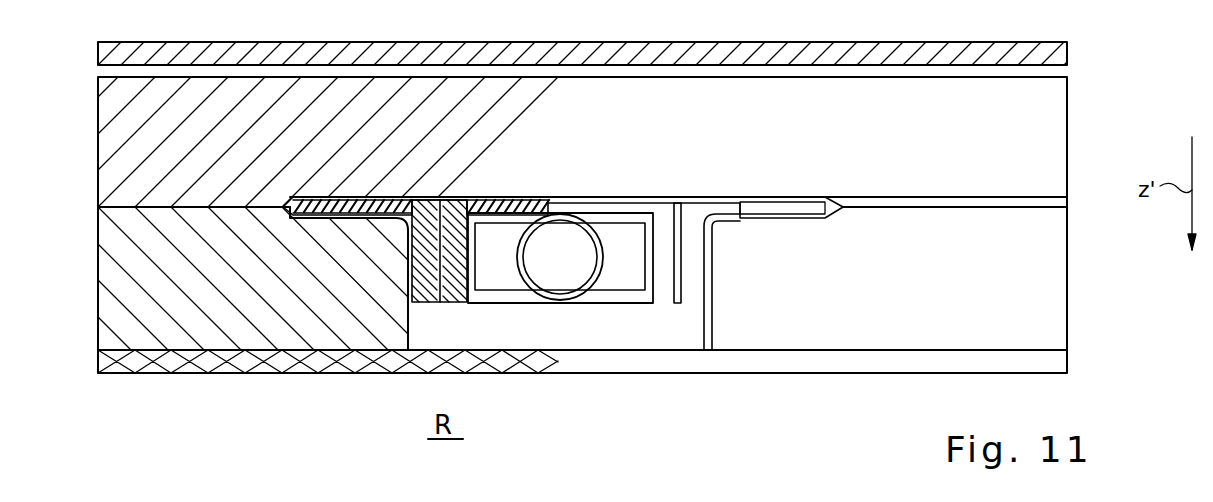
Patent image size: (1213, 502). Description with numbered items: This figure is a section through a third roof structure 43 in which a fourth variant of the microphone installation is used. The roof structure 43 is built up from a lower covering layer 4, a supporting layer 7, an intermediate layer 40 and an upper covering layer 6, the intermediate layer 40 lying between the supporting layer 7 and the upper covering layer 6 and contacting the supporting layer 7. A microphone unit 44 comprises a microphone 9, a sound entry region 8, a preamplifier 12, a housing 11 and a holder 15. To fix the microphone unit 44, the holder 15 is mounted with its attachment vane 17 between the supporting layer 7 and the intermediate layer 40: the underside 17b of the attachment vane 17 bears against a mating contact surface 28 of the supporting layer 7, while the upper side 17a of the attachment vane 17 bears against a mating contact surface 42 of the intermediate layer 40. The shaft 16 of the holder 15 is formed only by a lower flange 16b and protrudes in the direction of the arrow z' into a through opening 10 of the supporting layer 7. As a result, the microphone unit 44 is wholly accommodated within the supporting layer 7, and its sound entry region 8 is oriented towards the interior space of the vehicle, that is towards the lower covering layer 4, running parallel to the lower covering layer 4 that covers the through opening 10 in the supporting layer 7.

The third roof structure 43 is at (1047, 15).
The upper covering layer 6 is at (1055, 52).
The intermediate layer 40 is at (1033, 143).
The supporting layer 7 is at (1043, 278).
The lower covering layer 4 is at (1048, 362).
The attachment vane 17 is at (793, 205).
The upper side of the attachment vane 17a is at (777, 199).
The underside of the attachment vane 17b is at (783, 220).
The mating contact surface of the intermediate layer 42 is at (806, 220).
The mating contact surface of the supporting layer 28 is at (740, 203).
The lower flange 16b is at (678, 246).
The preamplifier 12 is at (620, 239).
The microphone 9 is at (562, 234).
The holder 15 is at (696, 272).
The through opening 10 is at (567, 323).
The sound entry region 8 is at (600, 303).
The microphone unit 44 is at (635, 318).
The housing 11 is at (665, 303).
The shaft 16 is at (688, 318).